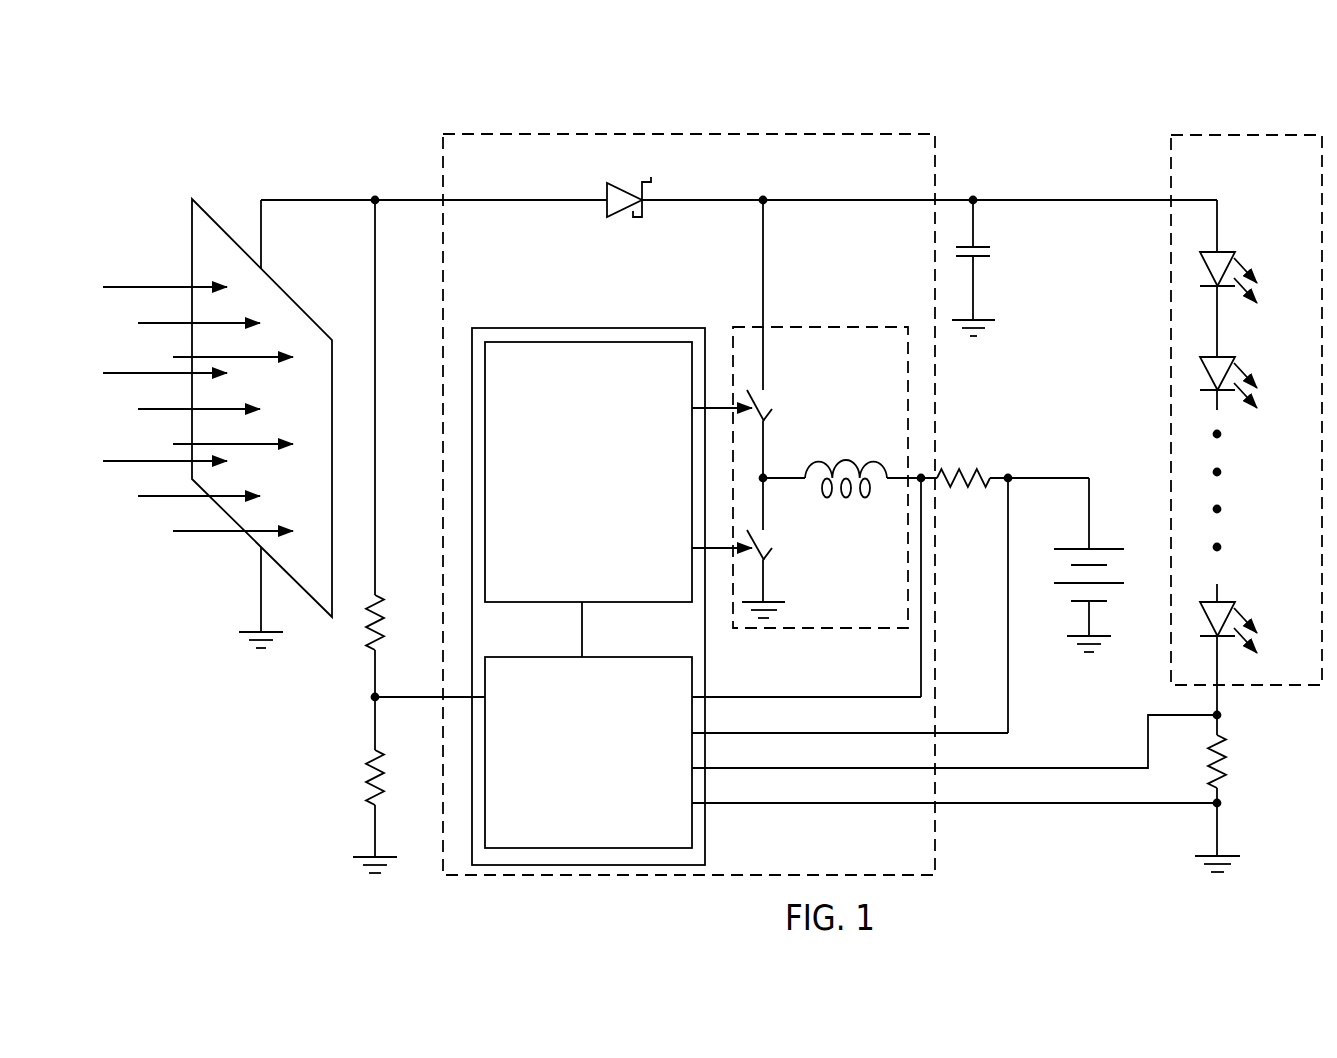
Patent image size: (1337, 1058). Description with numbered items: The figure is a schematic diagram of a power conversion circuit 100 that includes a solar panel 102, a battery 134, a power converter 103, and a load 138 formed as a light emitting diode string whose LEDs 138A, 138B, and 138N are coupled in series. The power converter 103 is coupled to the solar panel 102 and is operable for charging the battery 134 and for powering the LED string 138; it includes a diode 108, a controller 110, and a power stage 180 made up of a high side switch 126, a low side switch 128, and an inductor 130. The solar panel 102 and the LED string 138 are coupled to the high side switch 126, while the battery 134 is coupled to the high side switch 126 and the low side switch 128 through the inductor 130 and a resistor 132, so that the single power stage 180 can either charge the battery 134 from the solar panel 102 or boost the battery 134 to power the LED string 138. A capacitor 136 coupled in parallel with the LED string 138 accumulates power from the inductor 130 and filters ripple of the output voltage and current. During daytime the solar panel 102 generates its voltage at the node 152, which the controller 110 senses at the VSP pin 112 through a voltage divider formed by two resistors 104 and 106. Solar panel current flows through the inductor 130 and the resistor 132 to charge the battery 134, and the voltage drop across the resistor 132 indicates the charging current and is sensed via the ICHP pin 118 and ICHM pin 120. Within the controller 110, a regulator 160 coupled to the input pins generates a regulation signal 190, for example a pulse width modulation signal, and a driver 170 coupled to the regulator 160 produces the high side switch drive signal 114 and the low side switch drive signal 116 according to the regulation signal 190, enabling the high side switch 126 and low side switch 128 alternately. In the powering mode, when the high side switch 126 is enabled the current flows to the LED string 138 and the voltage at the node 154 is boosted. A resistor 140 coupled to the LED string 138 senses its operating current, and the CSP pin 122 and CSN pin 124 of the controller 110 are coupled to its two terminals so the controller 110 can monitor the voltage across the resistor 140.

The power conversion circuit 100 is at (256, 126).
The solar panel 102 is at (290, 300).
The power converter 103 is at (822, 134).
The resistor 104 is at (377, 600).
The resistor 106 is at (378, 755).
The diode 108 is at (610, 183).
The controller 110 is at (585, 328).
The voltage sense panel (VSP) pin 112 is at (434, 697).
The high side switch drive signal 114 is at (692, 407).
The low side switch drive signal 116 is at (692, 547).
The ICHP pin 118 is at (735, 697).
The ICHM pin 120 is at (735, 733).
The CSP pin 122 is at (735, 768).
The CSN pin 124 is at (735, 803).
The high side switch 126 is at (767, 417).
The low side switch 128 is at (767, 555).
The inductor 130 is at (838, 460).
The resistor 132 is at (980, 464).
The battery 134 is at (1102, 549).
The capacitor 136 is at (991, 247).
The load (LED string) 138 is at (1236, 135).
The LED 138A is at (1228, 252).
The LED 138B is at (1222, 357).
The LED 138N is at (1232, 602).
The resistor 140 is at (1234, 753).
The node 152 is at (377, 198).
The node 154 is at (765, 199).
The regulator 160 is at (588, 752).
The driver 170 is at (588, 472).
The power stage 180 is at (853, 327).
The regulation signal 190 is at (583, 640).